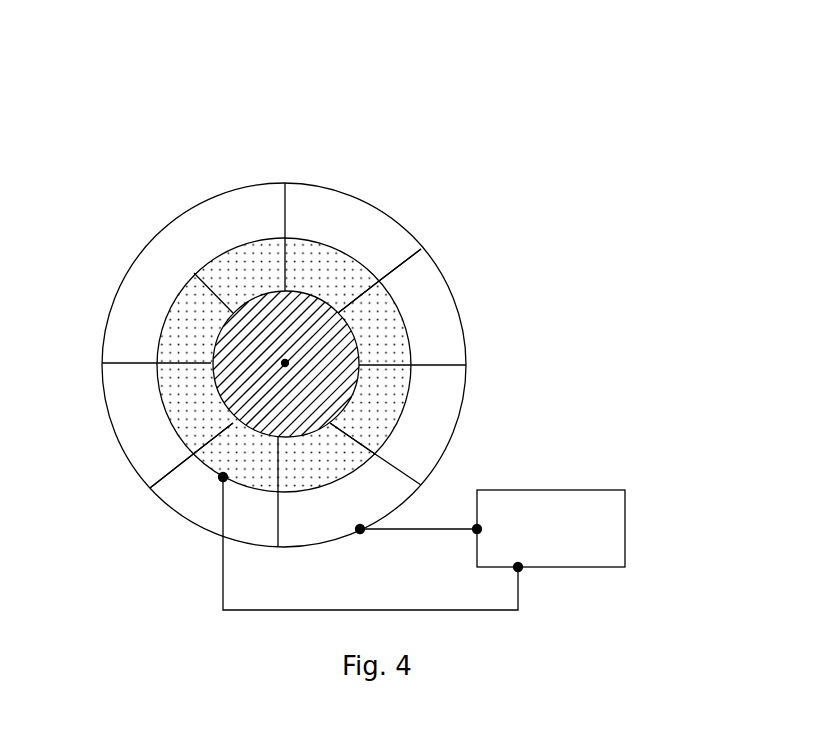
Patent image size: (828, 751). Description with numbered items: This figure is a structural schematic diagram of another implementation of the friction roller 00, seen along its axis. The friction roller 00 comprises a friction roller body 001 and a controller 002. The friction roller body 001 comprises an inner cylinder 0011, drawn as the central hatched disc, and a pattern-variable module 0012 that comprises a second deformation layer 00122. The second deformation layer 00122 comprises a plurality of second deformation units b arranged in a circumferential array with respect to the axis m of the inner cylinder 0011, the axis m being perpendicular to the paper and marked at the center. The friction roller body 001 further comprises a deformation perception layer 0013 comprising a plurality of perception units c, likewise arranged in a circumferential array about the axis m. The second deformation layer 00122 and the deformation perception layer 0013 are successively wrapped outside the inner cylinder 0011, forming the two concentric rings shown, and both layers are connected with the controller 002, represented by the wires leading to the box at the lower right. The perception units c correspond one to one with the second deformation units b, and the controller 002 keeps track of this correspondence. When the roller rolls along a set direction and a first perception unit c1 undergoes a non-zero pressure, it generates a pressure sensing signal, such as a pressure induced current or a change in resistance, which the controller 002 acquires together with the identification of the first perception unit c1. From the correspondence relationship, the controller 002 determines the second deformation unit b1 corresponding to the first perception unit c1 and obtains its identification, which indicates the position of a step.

The friction roller 00 is at (398, 58).
The friction roller body 001 is at (530, 140).
The inner cylinder 0011 is at (306, 305).
The pattern-variable module 0012 is at (630, 293).
The deformation perception layer 0013 is at (500, 253).
The second deformation layer 00122 is at (527, 397).
The controller 002 is at (580, 490).
The axis m is at (285, 363).
The second deformation units b is at (410, 349).
The second deformation unit b1 is at (162, 413).
The perception units c is at (404, 222).
The first perception unit c1 is at (102, 393).